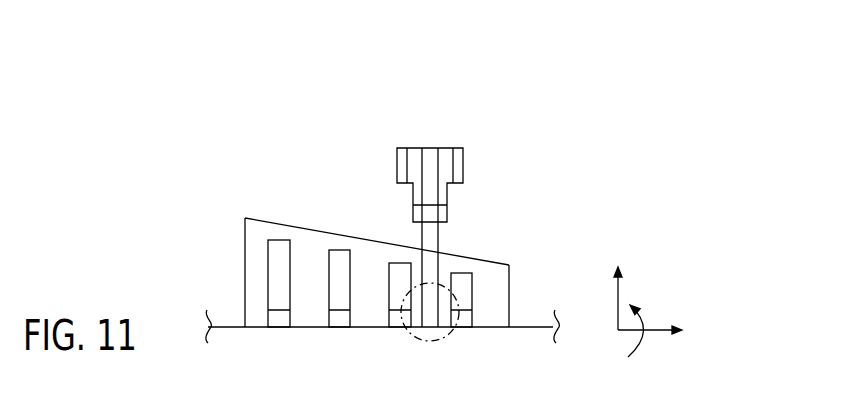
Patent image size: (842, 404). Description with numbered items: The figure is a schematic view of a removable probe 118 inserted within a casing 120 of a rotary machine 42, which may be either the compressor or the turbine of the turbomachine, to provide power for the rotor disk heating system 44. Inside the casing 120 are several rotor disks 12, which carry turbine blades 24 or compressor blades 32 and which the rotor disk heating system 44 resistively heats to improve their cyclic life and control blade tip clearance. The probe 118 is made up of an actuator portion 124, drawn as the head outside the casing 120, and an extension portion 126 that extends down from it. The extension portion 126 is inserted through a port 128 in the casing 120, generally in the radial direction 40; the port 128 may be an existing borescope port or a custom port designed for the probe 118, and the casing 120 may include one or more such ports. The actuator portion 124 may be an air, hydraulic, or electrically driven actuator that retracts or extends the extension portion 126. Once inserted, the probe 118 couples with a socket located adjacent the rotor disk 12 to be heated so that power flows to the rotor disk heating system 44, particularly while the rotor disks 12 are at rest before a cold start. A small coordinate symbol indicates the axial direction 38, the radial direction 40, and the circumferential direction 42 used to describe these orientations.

The rotor disk 12 is at (341, 322).
The turbine blade 24 is at (278, 240).
The compressor blade 32 is at (338, 250).
The axial direction 38 is at (645, 331).
The radial direction 40 is at (617, 302).
The rotary machine 42 is at (193, 180).
The rotor disk heating system 44 is at (528, 217).
The removable probe 118 is at (466, 177).
The casing 120 is at (382, 243).
The actuator portion 124 is at (428, 148).
The extension portion 126 is at (440, 235).
The port 128 is at (438, 252).